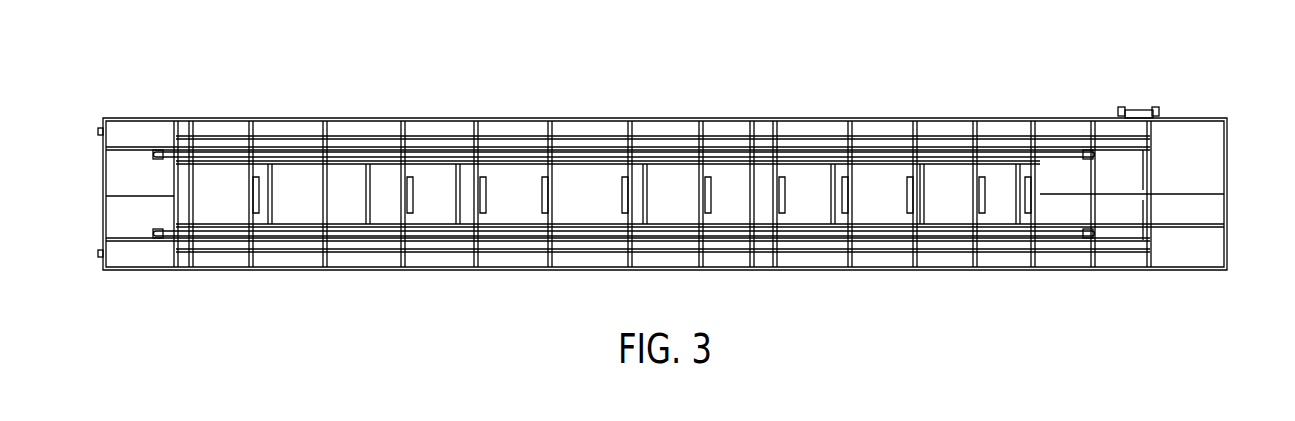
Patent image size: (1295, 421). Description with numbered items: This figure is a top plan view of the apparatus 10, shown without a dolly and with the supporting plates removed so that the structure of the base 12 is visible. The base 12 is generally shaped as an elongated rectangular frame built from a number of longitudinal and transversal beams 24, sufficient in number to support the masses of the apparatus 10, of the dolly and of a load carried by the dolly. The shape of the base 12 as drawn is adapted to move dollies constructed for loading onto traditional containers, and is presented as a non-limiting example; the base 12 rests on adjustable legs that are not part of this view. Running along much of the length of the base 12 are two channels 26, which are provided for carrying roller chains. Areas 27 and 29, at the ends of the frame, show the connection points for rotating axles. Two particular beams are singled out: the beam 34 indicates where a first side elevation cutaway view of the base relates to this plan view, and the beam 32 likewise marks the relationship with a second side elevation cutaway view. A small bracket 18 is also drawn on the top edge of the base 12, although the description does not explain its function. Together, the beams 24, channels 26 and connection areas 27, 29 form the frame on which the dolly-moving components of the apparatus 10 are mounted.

The apparatus 10 is at (648, 60).
The base 12 is at (731, 118).
The bracket 18 is at (1138, 108).
The beams 24 is at (102, 178).
The channels 26 is at (170, 142).
The area 27 is at (132, 142).
The area 29 is at (1113, 140).
The beam 32 is at (293, 250).
The beam 34 is at (307, 140).